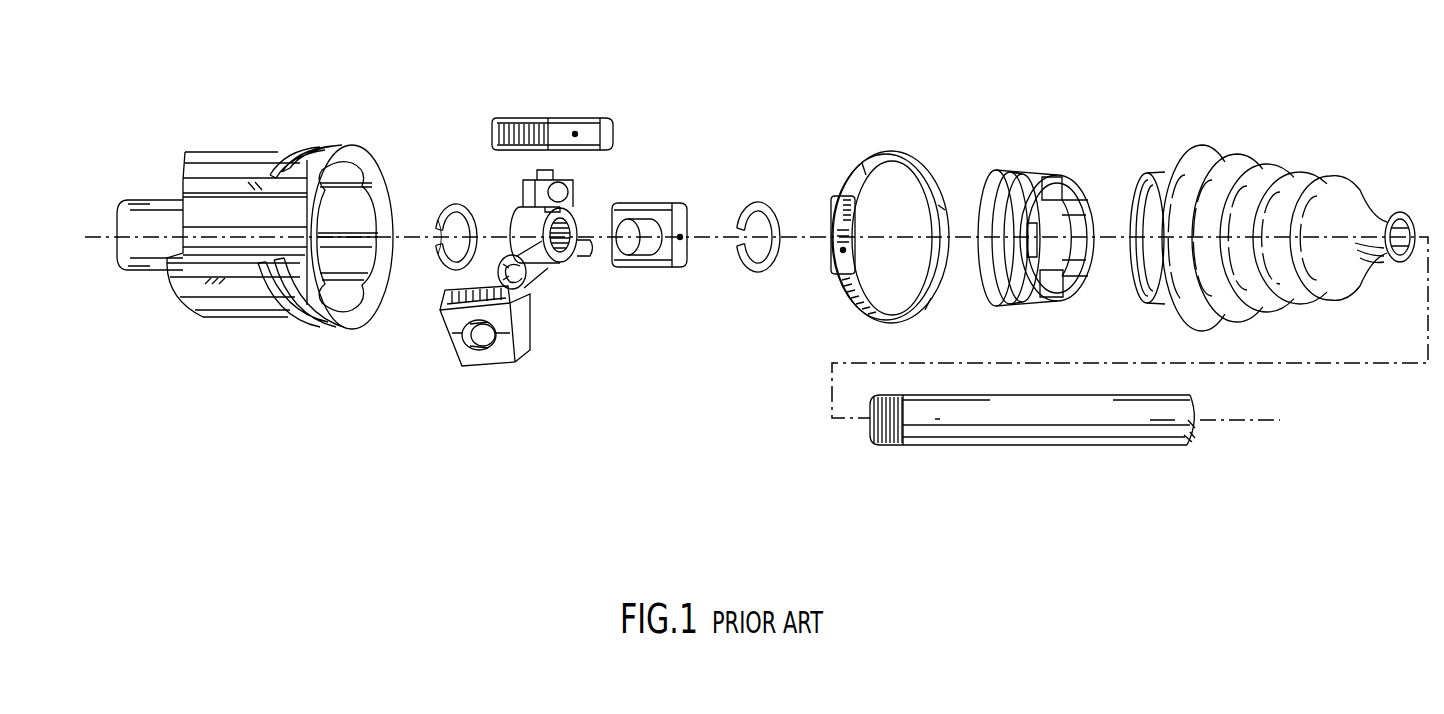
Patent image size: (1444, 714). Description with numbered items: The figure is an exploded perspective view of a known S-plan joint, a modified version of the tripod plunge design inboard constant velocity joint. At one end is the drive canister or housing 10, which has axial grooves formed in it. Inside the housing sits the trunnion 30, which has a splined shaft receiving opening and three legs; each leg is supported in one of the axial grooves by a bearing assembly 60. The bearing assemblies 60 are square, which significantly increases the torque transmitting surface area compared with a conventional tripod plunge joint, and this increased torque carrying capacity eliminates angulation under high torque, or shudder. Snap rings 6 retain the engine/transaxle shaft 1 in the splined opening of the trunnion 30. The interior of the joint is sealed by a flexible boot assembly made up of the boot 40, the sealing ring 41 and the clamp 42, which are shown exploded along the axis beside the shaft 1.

The housing 10 is at (273, 150).
The snap rings 6 is at (448, 203).
The trunnion 30 is at (567, 267).
The bearing assembly 60 is at (614, 130).
The clamp 42 is at (883, 157).
The sealing ring 41 is at (1040, 173).
The boot 40 is at (1272, 160).
The engine/transaxle shaft 1 is at (1020, 445).